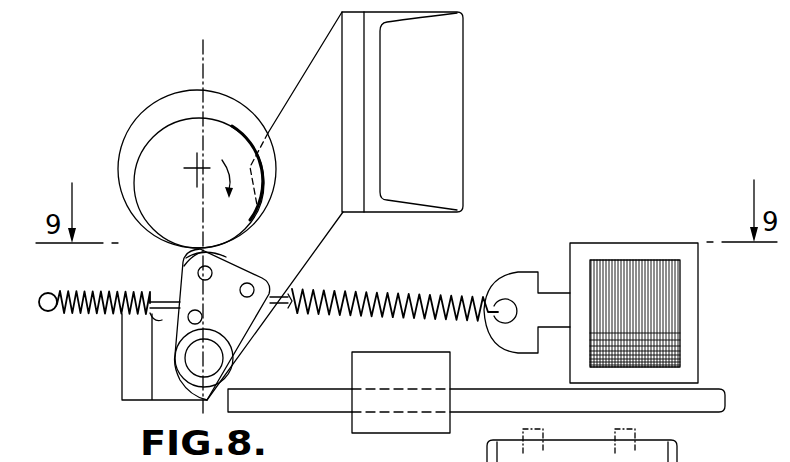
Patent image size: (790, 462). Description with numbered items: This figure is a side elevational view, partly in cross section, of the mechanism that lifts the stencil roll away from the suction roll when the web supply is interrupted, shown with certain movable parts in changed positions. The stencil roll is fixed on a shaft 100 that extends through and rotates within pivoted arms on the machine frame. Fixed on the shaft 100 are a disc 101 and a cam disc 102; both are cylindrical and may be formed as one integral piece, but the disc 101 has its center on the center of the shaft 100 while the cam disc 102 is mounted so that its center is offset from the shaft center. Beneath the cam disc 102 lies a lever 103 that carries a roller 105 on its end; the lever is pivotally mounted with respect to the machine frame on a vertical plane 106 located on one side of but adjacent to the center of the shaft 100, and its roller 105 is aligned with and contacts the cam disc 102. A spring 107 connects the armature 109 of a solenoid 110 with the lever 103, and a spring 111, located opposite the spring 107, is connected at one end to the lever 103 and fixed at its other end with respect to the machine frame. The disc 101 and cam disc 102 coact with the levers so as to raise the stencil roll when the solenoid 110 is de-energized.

The shaft 100 is at (196, 166).
The disc 101 is at (143, 110).
The cam disc 102 is at (231, 127).
The lever 103 is at (253, 338).
The roller 105 is at (224, 254).
The vertical plane 106 is at (204, 75).
The spring 107 is at (443, 293).
The armature 109 is at (527, 271).
The solenoid 110 is at (652, 243).
The spring 111 is at (91, 289).